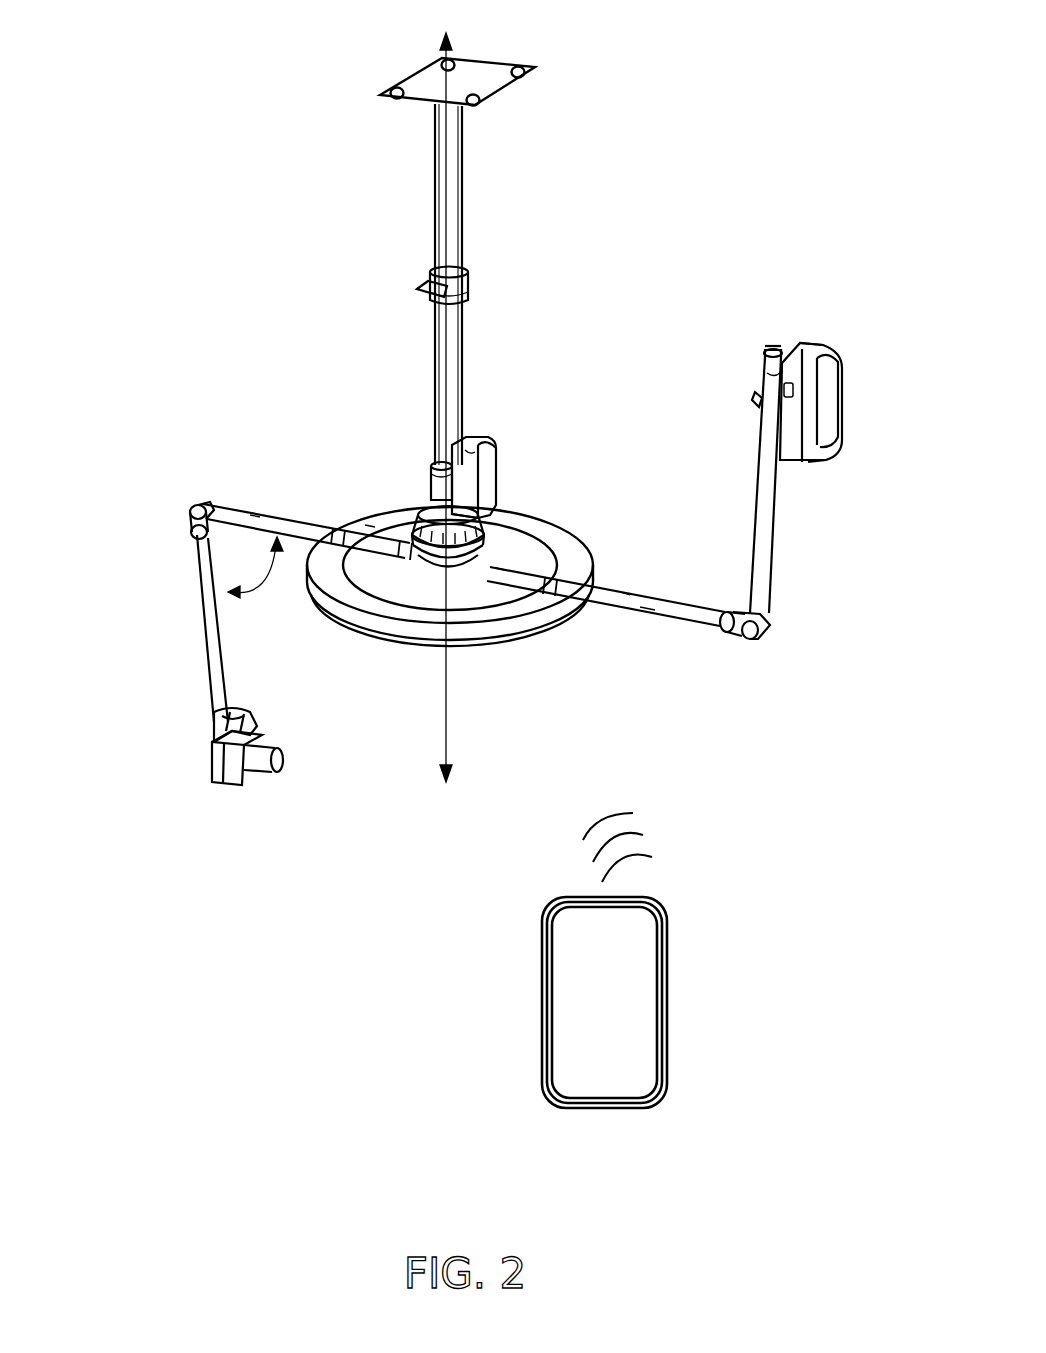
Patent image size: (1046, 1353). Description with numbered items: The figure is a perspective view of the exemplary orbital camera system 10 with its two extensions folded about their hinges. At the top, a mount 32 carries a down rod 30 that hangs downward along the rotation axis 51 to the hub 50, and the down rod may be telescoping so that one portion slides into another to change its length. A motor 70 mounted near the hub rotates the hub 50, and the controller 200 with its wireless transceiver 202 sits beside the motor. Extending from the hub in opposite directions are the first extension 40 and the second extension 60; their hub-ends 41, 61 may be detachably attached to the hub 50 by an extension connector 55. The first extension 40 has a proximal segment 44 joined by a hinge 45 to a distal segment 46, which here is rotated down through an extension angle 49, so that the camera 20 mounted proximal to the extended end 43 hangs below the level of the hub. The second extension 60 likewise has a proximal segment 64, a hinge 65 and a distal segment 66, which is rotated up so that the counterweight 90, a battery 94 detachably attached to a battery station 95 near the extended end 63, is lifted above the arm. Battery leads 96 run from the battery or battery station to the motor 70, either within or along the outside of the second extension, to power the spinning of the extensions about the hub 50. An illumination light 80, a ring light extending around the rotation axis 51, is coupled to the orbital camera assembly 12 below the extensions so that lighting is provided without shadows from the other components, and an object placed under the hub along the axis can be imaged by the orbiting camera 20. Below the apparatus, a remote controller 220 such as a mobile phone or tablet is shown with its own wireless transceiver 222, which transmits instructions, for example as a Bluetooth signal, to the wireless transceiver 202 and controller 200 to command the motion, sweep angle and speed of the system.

The orbital camera system 10 is at (213, 165).
The orbital camera assembly 12 is at (447, 220).
The camera 20 is at (243, 786).
The down rod 30 is at (460, 320).
The mount 32 is at (470, 85).
The first extension 40 is at (240, 515).
The hub-end 41 is at (360, 522).
The extended end 43 is at (212, 756).
The proximal segment 44 is at (275, 525).
The hinge 45 is at (190, 503).
The distal segment 46 is at (215, 653).
The extension angle 49 is at (268, 596).
The hub 50 is at (413, 508).
The rotation axis 51 is at (446, 744).
The extension connector 55 is at (430, 566).
The second extension 60 is at (680, 607).
The hub-end 61 is at (495, 565).
The extended end 63 is at (773, 347).
The proximal segment 64 is at (620, 596).
The hinge 65 is at (748, 640).
The distal segment 66 is at (770, 528).
The motor 70 is at (490, 495).
The illumination light 80 is at (505, 628).
The counterweight 90 is at (842, 405).
The battery 94 is at (838, 345).
The battery station 95 is at (820, 453).
The battery leads 96 is at (653, 607).
The controller 200 is at (470, 462).
The wireless transceiver 202 is at (458, 440).
The remote controller 220 is at (553, 907).
The wireless transceiver 222 is at (665, 915).